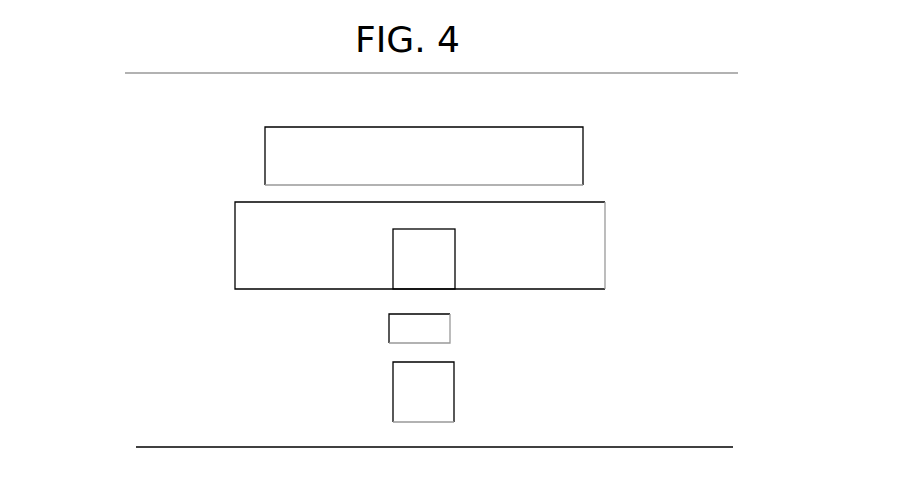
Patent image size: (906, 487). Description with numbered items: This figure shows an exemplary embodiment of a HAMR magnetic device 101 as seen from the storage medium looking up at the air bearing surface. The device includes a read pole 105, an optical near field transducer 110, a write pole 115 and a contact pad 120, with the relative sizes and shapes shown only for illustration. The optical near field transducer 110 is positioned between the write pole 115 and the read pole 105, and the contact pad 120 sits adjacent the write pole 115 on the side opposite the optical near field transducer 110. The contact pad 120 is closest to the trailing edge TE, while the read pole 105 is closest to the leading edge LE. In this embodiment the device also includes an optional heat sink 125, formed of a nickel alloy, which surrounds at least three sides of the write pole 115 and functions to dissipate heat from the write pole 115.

The magnetic device 101 is at (106, 156).
The read pole 105 is at (393, 400).
The optical near field transducer 110 is at (389, 335).
The write pole 115 is at (393, 247).
The contact pad 120 is at (265, 165).
The heat sink 125 is at (586, 260).
The trailing edge TE is at (451, 74).
The leading edge LE is at (463, 447).